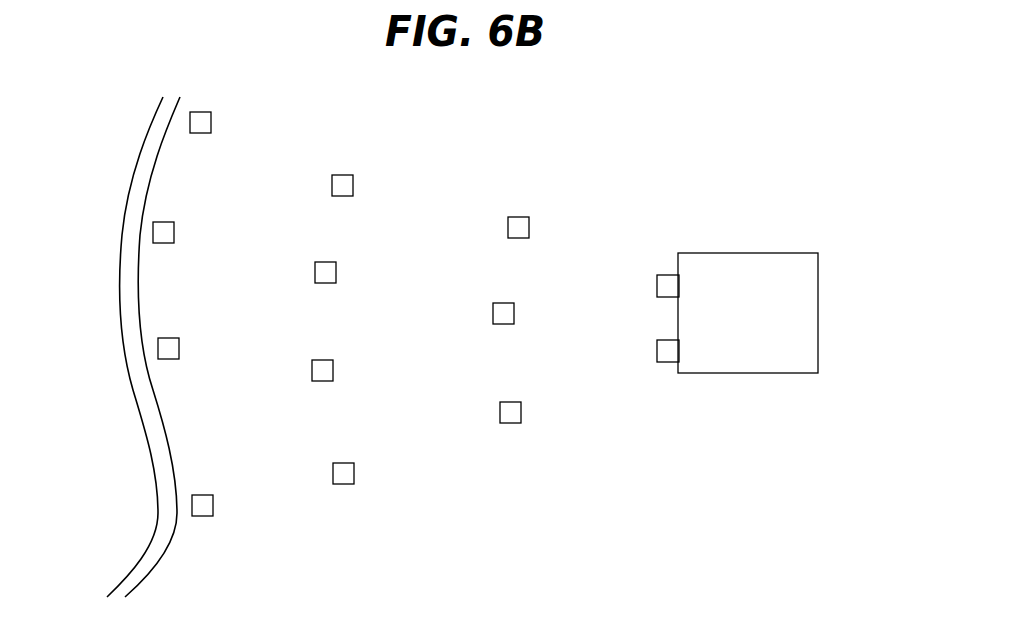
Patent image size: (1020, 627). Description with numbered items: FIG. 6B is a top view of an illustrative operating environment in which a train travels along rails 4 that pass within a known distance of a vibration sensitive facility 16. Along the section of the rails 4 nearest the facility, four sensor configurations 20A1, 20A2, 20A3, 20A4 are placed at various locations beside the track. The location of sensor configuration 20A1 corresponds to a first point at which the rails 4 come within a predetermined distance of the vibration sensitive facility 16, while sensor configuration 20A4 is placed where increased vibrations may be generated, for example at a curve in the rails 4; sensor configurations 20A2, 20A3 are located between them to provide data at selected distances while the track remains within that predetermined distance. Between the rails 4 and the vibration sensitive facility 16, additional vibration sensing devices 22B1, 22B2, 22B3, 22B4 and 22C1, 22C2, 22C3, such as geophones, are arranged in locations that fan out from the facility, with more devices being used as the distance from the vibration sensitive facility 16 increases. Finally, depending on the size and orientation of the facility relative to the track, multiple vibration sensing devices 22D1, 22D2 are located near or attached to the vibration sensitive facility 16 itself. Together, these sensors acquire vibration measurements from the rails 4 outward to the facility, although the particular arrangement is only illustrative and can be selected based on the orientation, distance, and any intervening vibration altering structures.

The rails 4 is at (105, 132).
The vibration sensitive facility 16 is at (759, 330).
The sensor configuration 20A1 is at (202, 112).
The sensor configuration 20A2 is at (163, 222).
The sensor configuration 20A3 is at (168, 338).
The sensor configuration 20A4 is at (202, 495).
The vibration sensing device 22B1 is at (338, 175).
The vibration sensing device 22B2 is at (322, 262).
The vibration sensing device 22B3 is at (318, 360).
The vibration sensing device 22B4 is at (340, 463).
The vibration sensing device 22C1 is at (515, 217).
The vibration sensing device 22C2 is at (500, 303).
The vibration sensing device 22C3 is at (507, 402).
The vibration sensing device 22D1 is at (668, 275).
The vibration sensing device 22D2 is at (668, 362).